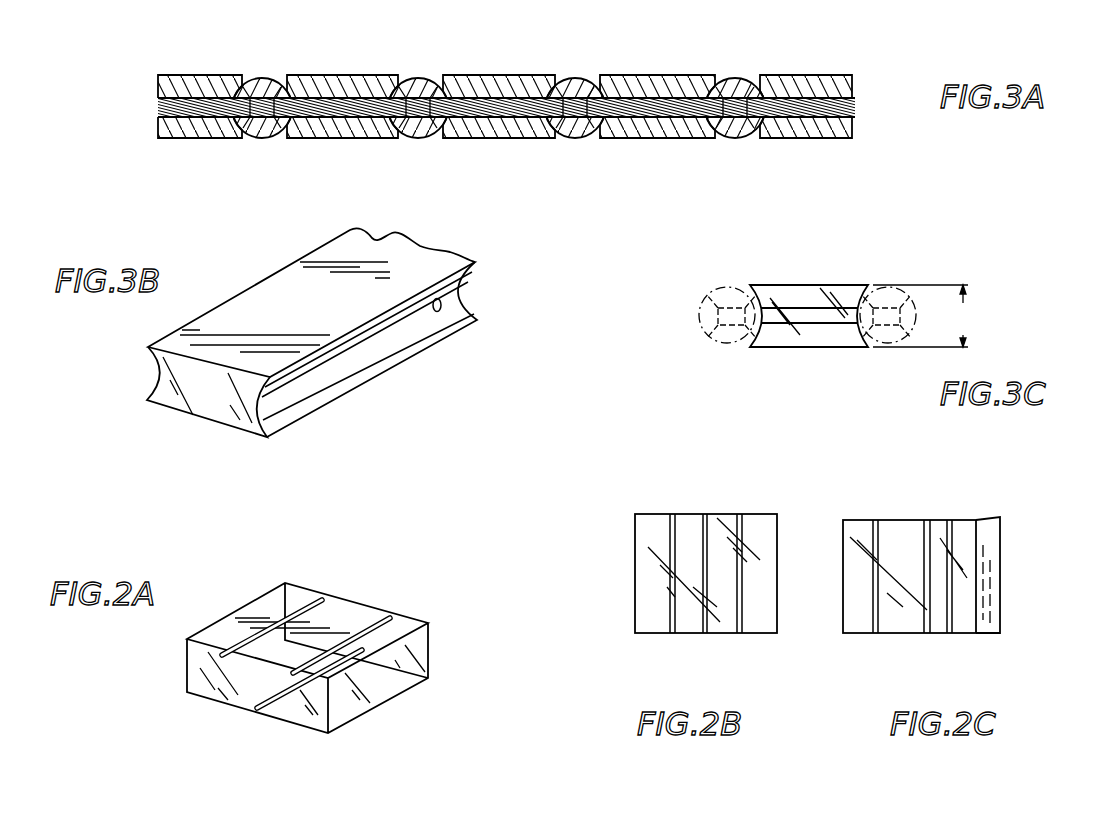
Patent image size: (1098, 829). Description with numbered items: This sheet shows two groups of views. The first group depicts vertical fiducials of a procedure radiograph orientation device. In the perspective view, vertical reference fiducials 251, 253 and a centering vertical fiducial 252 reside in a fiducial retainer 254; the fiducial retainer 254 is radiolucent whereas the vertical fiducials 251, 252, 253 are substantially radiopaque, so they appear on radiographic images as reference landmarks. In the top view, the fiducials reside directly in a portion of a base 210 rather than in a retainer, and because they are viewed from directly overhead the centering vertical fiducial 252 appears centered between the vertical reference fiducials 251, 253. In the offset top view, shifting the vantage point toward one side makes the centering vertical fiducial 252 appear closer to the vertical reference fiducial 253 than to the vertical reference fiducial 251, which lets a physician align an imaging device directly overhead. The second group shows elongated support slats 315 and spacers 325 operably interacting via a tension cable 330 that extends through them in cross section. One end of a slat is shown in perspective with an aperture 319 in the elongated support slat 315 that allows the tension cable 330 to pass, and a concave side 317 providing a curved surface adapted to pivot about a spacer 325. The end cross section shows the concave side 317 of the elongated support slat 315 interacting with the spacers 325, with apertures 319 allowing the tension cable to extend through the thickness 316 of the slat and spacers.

In FIG. 3A, the elongated support slat 315 is at (193, 75).
In FIG. 3B, the elongated support slat 315 is at (198, 420).
In FIG. 3C, the elongated support slat 315 is at (810, 283).
In FIG. 3A, the spacer 325 is at (262, 140).
In FIG. 3C, the spacer 325 is at (709, 297).
In FIG. 3A, the tension cable 330 is at (852, 110).
In FIG. 3B, the concave side 317 is at (463, 291).
In FIG. 3B, the aperture 319 is at (437, 312).
In FIG. 3C, the aperture 319 is at (728, 327).
In FIG. 3C, the thickness 316 is at (927, 316).
In FIG. 2A, the vertical reference fiducial 251 is at (303, 600).
In FIG. 2B, the vertical reference fiducial 251 is at (668, 543).
In FIG. 2C, the vertical reference fiducial 251 is at (870, 532).
In FIG. 2A, the centering vertical fiducial 252 is at (265, 698).
In FIG. 2B, the centering vertical fiducial 252 is at (702, 532).
In FIG. 2C, the centering vertical fiducial 252 is at (925, 532).
In FIG. 2A, the vertical reference fiducial 253 is at (372, 620).
In FIG. 2B, the vertical reference fiducial 253 is at (742, 528).
In FIG. 2C, the vertical reference fiducial 253 is at (950, 533).
In FIG. 2A, the fiducial retainer 254 is at (428, 645).
In FIG. 2C, the fiducial retainer 254 is at (1000, 520).
In FIG. 2B, the base 210 is at (762, 633).
In FIG. 2C, the base 210 is at (958, 633).